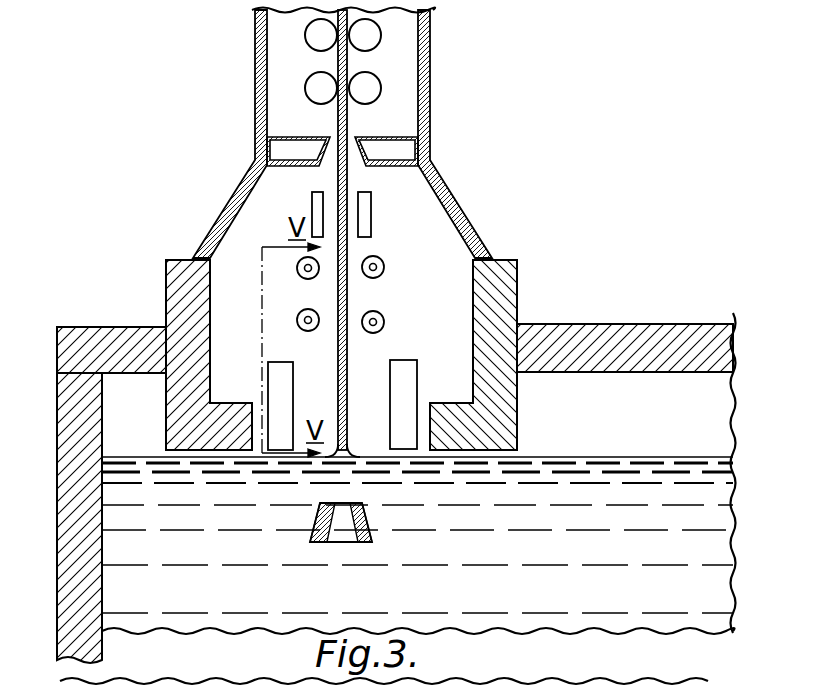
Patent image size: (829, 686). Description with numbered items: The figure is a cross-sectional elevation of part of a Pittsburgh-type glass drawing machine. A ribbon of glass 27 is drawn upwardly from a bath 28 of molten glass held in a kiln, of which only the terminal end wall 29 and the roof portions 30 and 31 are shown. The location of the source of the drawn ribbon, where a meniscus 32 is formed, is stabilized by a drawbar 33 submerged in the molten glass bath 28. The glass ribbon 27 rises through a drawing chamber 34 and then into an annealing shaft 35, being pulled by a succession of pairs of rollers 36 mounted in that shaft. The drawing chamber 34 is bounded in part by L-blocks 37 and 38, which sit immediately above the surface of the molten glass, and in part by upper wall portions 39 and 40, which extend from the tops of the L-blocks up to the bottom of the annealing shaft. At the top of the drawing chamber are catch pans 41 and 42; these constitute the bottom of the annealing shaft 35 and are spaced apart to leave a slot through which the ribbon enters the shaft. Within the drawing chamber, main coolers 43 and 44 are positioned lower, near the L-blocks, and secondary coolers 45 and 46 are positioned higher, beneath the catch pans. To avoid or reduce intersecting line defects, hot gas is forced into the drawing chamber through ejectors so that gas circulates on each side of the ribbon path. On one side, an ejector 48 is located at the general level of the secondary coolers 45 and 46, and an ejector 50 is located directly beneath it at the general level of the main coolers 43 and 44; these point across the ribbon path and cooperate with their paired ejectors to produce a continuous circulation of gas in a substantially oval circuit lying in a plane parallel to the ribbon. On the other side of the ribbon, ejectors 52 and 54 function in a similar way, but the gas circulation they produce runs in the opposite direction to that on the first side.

The ribbon of glass 27 is at (348, 257).
The bath of molten glass 28 is at (357, 600).
The terminal end wall 29 is at (58, 463).
The roof portion 30 is at (128, 348).
The roof portion 31 is at (582, 350).
The meniscus 32 is at (347, 456).
The drawbar 33 is at (365, 517).
The drawing chamber 34 is at (275, 226).
The annealing shaft 35 is at (411, 76).
The pairs of rollers 36 is at (368, 90).
The L-block 37 is at (180, 263).
The L-block 38 is at (508, 260).
The upper wall portion 39 is at (240, 183).
The upper wall portion 40 is at (448, 185).
The catch pan 41 is at (295, 150).
The catch pan 42 is at (385, 147).
The main cooler 43 is at (283, 392).
The main cooler 44 is at (402, 402).
The secondary cooler 45 is at (315, 212).
The secondary cooler 46 is at (367, 213).
The ejector 48 is at (297, 268).
The ejector 50 is at (297, 320).
The ejector 52 is at (384, 267).
The ejector 54 is at (384, 322).